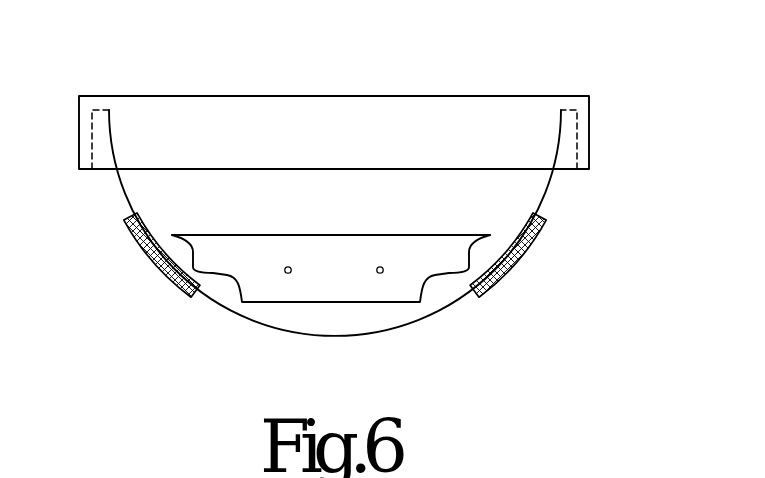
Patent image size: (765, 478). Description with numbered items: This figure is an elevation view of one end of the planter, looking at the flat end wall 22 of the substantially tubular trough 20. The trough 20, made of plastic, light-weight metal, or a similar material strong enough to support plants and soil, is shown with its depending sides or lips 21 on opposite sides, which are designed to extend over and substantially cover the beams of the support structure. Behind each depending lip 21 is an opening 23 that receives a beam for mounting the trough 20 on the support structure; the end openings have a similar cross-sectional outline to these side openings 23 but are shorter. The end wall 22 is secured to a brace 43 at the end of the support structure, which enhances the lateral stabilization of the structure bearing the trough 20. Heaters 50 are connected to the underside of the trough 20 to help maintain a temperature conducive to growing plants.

The trough 20 is at (380, 221).
The depending sides 21 is at (533, 118).
The end wall 22 is at (525, 186).
The opening 23 is at (567, 123).
The brace 43 is at (308, 290).
The heaters 50 is at (172, 277).